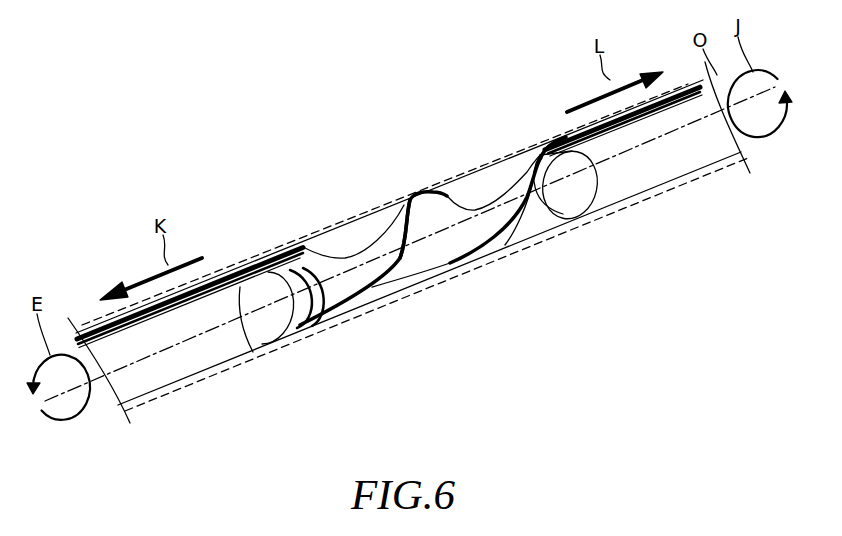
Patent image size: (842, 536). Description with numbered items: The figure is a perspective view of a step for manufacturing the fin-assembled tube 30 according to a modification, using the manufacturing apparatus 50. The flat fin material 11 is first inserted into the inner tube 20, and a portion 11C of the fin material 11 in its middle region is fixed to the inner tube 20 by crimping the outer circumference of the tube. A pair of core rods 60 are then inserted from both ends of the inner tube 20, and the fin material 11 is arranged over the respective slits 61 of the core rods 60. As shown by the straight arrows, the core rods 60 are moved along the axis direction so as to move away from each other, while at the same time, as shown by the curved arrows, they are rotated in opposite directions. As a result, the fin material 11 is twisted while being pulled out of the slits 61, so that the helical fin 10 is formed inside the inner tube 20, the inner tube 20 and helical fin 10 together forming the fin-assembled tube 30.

The helical fin 10 is at (478, 262).
The fin material 11 is at (322, 330).
The portion of the fin material in the middle region 11C is at (432, 278).
The inner tube 20 is at (620, 208).
The fin-assembled tube 30 is at (660, 194).
The manufacturing apparatus 50 is at (137, 172).
The core rod 60 is at (227, 370).
The slit 61 is at (253, 352).